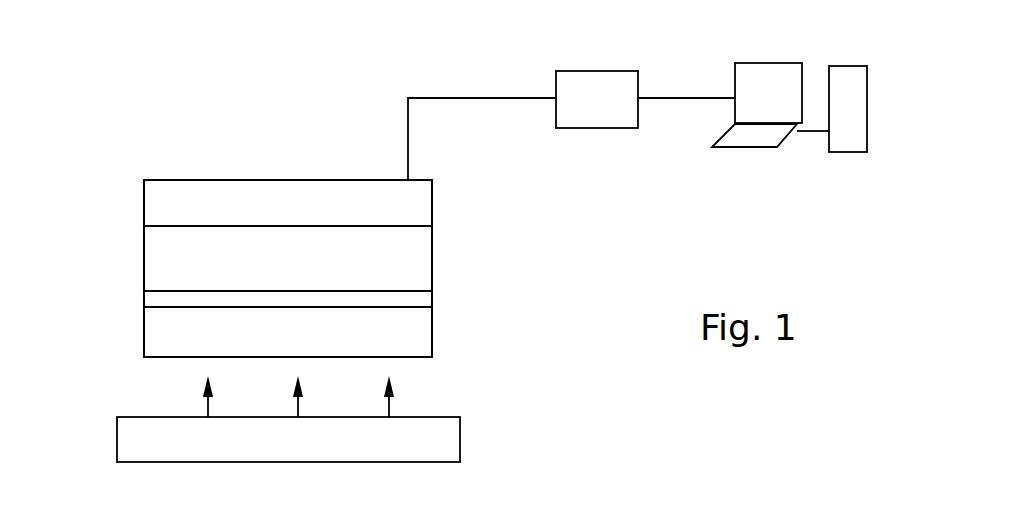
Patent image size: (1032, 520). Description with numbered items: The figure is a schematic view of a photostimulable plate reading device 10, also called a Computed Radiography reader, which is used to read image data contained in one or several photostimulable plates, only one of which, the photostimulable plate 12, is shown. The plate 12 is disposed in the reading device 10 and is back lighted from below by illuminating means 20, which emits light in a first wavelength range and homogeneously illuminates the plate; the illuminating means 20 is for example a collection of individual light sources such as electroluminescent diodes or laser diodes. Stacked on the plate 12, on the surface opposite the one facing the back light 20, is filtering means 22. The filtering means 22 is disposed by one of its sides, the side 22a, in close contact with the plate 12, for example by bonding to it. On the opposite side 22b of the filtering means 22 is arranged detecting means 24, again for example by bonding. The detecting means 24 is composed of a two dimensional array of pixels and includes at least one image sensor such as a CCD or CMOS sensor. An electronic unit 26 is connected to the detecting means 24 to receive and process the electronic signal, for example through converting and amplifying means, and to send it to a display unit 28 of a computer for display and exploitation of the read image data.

The photostimulable plate reading device 10 is at (88, 192).
The photostimulable plate 12 is at (447, 327).
The illuminating means 20 is at (460, 440).
The filtering means 22 is at (432, 268).
The side of filtering means 22a is at (146, 291).
The opposite side of filtering means 22b is at (187, 226).
The detecting means 24 is at (432, 204).
The electronic unit 26 is at (600, 71).
The display unit 28 is at (879, 70).